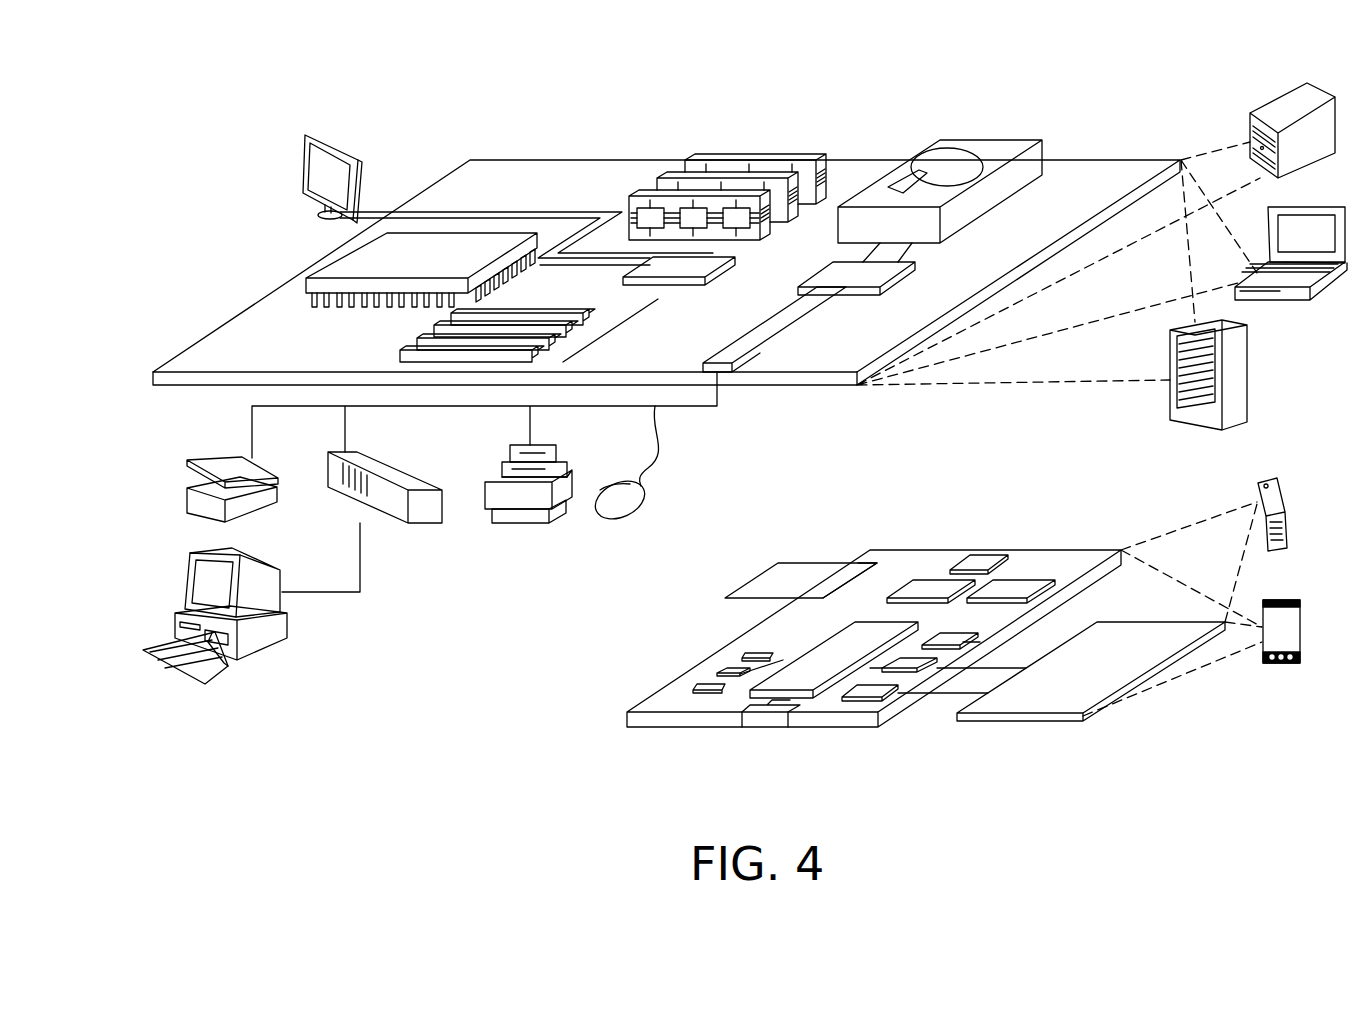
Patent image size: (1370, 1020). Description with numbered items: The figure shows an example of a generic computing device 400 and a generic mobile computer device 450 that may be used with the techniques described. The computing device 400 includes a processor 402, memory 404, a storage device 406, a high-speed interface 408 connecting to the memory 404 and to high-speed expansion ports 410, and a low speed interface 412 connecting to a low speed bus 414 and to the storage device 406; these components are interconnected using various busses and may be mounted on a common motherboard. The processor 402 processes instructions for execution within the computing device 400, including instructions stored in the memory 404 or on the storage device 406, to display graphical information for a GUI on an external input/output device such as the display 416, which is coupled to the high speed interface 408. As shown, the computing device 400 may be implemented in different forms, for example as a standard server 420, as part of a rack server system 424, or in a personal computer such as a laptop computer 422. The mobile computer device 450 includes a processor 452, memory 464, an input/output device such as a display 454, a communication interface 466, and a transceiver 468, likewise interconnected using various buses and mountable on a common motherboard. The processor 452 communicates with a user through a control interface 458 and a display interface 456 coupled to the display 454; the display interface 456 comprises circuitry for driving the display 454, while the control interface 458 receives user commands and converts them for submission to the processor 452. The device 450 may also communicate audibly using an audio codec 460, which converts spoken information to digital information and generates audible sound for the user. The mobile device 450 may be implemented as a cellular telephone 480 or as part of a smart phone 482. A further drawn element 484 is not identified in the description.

The computing device 400 is at (701, 413).
The processor 402 is at (330, 258).
The memory 404 is at (757, 153).
The storage device 406 is at (978, 140).
The high-speed interface 408 is at (694, 264).
The high-speed expansion ports 410 is at (422, 338).
The low speed interface 412 is at (830, 271).
The low speed bus 414 is at (720, 361).
The display 416 is at (308, 133).
The standard server 420 is at (1270, 110).
The laptop computer 422 is at (1320, 207).
The rack server system 424 is at (1250, 375).
The mobile computer device 450 is at (1162, 716).
The processor 452 is at (800, 660).
The display 454 is at (1127, 634).
The display interface 456 is at (880, 694).
The control interface 458 is at (917, 662).
The audio codec 460 is at (950, 633).
The memory 464 is at (728, 672).
The communication interface 466 is at (931, 580).
The transceiver 468 is at (1018, 580).
The cellular telephone 480 is at (983, 556).
The smart phone 482 is at (858, 563).
The battery 484 is at (781, 563).